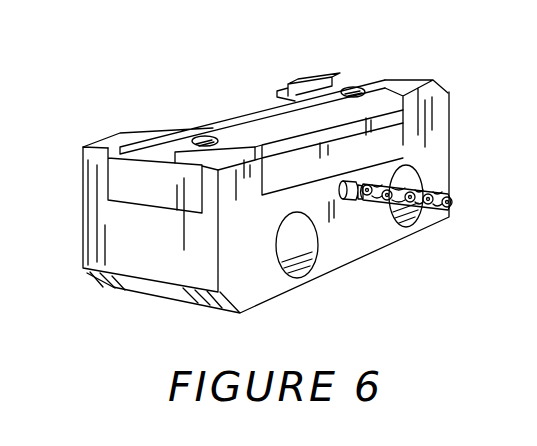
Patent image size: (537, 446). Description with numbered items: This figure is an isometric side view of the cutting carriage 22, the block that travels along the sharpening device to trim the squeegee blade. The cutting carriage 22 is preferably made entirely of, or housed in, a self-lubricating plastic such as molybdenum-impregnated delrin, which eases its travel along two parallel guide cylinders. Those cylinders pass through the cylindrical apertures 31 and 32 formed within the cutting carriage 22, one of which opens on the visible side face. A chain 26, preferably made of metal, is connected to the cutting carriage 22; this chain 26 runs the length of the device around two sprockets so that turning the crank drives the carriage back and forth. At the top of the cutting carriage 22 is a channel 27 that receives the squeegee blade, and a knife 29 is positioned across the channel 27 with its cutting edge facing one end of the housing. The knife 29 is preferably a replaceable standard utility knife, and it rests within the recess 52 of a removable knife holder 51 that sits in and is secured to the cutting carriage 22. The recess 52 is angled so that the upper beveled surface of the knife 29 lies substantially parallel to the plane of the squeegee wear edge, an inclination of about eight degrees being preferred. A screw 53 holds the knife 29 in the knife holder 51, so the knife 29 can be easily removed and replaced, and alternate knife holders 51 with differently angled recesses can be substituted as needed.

The cutting carriage 22 is at (102, 220).
The chain 26 is at (448, 193).
The channel 27 is at (393, 126).
The knife 29 is at (268, 117).
The cylindrical aperture 31 is at (303, 250).
The cylindrical aperture 32 is at (432, 214).
The knife holder 51 is at (113, 185).
The recess 52 is at (182, 137).
The screw 53 is at (200, 136).